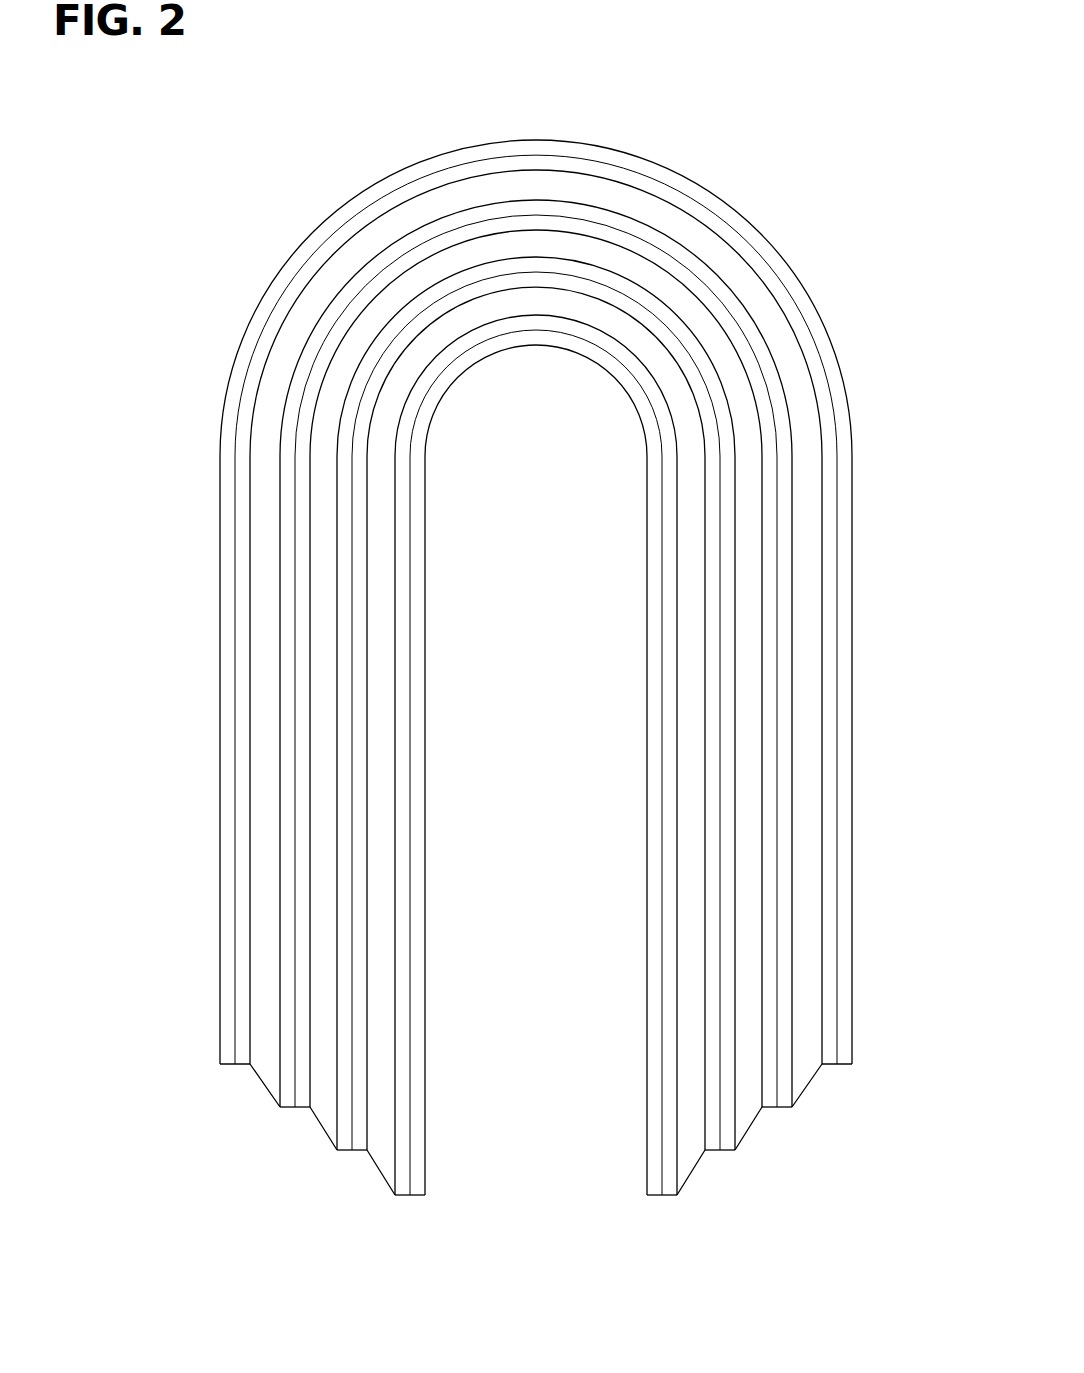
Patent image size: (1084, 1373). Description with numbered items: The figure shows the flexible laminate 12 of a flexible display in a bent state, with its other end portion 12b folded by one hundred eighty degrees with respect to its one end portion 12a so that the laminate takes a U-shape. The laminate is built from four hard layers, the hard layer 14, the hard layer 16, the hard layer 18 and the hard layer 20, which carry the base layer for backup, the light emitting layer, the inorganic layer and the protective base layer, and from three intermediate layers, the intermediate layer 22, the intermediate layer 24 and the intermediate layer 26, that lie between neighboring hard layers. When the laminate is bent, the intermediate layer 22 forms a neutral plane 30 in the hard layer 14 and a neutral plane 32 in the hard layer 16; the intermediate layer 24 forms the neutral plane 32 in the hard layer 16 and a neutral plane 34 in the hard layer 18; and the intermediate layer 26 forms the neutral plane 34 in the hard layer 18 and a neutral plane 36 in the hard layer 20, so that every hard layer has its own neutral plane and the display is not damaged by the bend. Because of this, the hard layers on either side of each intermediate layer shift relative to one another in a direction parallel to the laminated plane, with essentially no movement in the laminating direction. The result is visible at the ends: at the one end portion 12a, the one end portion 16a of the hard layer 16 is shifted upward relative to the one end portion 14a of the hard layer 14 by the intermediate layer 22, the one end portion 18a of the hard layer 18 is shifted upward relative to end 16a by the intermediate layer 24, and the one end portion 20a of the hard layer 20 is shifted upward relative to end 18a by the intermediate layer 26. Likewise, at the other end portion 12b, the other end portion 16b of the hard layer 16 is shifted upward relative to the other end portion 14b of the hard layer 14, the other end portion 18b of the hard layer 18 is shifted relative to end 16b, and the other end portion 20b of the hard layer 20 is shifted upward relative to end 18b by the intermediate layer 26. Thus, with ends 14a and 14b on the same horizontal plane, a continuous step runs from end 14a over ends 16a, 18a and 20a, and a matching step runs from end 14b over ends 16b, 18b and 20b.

The flexible laminate 12 is at (792, 147).
The one end portion 12a is at (247, 1240).
The other end portion 12b is at (865, 1238).
The hard layer 14 is at (542, 785).
The one end portion of the hard layer 14 14a is at (400, 1200).
The other end portion of the hard layer 14 14b is at (670, 1198).
The hard layer 16 is at (539, 734).
The one end portion of the hard layer 16 16a is at (345, 1155).
The other end portion of the hard layer 16 16b is at (728, 1153).
The hard layer 18 is at (540, 653).
The one end portion of the hard layer 18 18a is at (288, 1112).
The other end portion of the hard layer 18 18b is at (787, 1108).
The hard layer 20 is at (541, 634).
The one end portion of the hard layer 20 20a is at (232, 1068).
The other end portion of the hard layer 20 20b is at (838, 1068).
The intermediate layer 22 is at (683, 565).
The intermediate layer 24 is at (718, 353).
The intermediate layer 26 is at (726, 262).
The neutral plane 30 is at (412, 520).
The neutral plane 32 is at (360, 410).
The neutral plane 34 is at (397, 257).
The neutral plane 36 is at (262, 302).